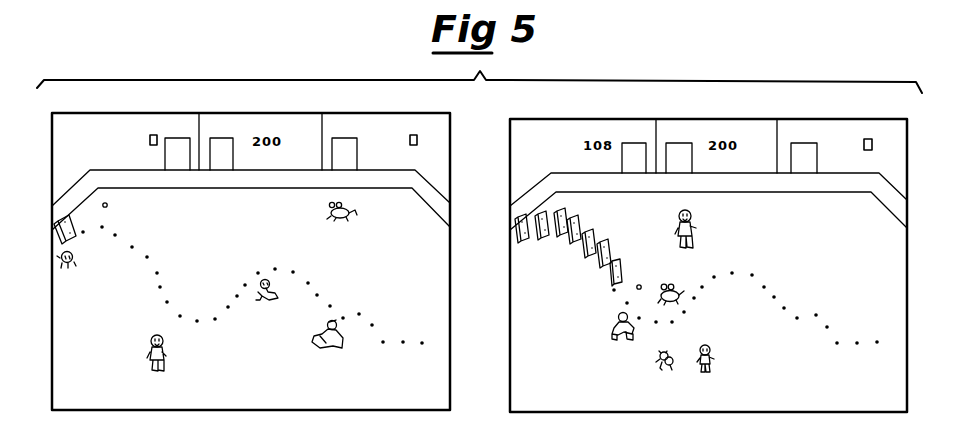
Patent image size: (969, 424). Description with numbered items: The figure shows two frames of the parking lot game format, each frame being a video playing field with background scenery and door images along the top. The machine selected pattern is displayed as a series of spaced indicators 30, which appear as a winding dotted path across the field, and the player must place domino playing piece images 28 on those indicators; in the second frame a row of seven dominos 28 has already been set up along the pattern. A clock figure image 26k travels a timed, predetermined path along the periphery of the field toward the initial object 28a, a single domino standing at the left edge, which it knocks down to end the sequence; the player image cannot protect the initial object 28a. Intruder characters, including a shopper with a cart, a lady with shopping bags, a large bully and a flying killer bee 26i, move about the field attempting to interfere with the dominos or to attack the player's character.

The killer bee image 26i is at (664, 368).
The clock figure image 26k is at (80, 259).
The playing piece images 28 is at (569, 238).
The initial object 28a is at (60, 240).
The indicators 30 is at (754, 275).